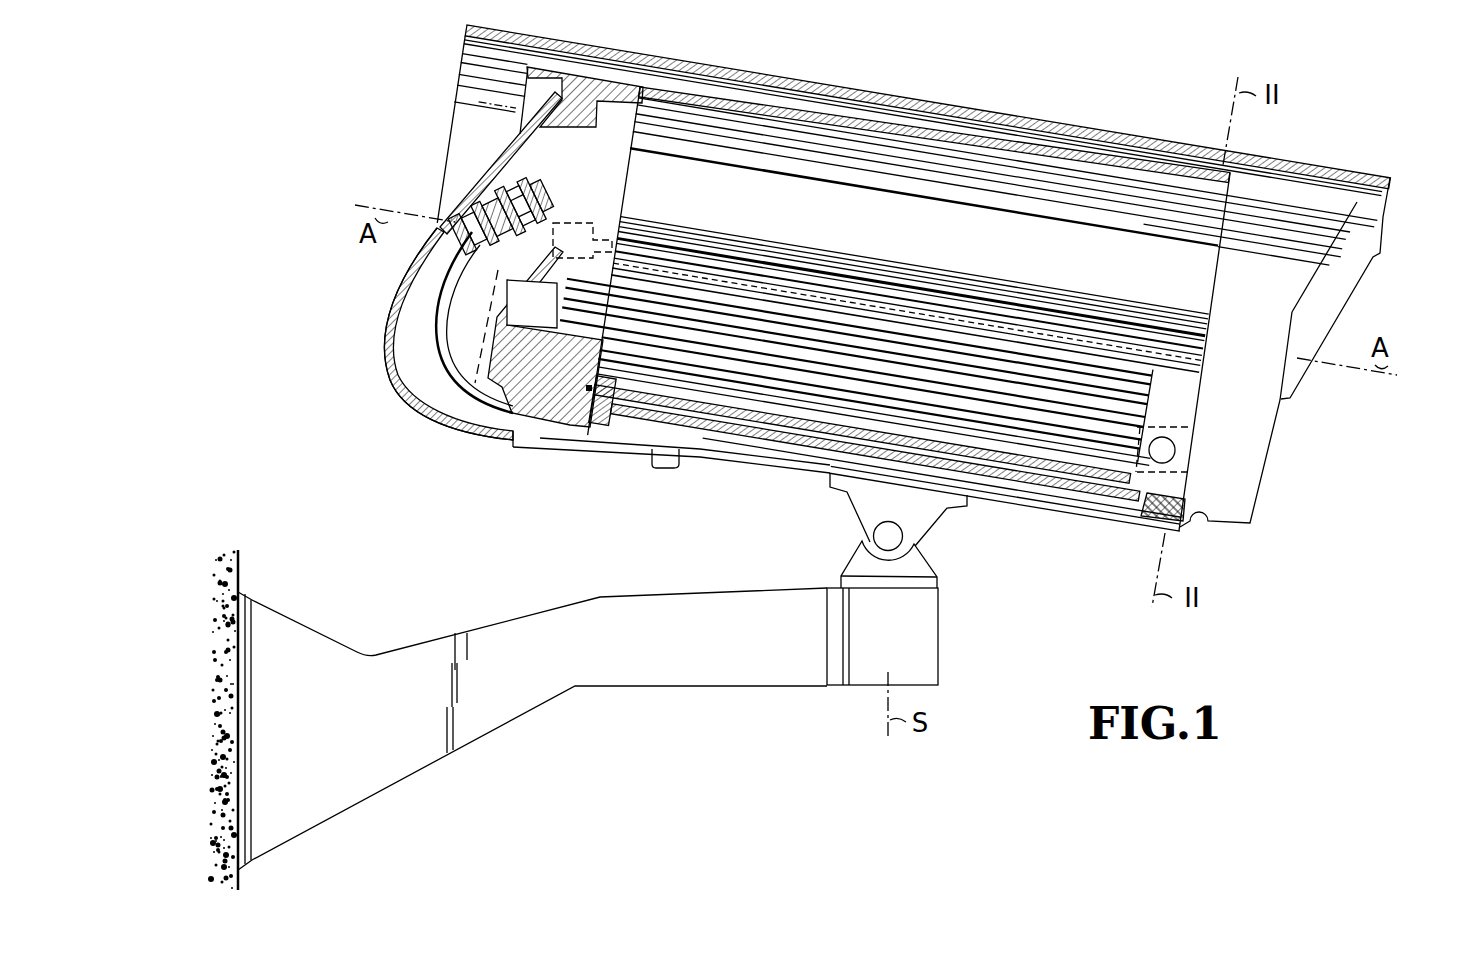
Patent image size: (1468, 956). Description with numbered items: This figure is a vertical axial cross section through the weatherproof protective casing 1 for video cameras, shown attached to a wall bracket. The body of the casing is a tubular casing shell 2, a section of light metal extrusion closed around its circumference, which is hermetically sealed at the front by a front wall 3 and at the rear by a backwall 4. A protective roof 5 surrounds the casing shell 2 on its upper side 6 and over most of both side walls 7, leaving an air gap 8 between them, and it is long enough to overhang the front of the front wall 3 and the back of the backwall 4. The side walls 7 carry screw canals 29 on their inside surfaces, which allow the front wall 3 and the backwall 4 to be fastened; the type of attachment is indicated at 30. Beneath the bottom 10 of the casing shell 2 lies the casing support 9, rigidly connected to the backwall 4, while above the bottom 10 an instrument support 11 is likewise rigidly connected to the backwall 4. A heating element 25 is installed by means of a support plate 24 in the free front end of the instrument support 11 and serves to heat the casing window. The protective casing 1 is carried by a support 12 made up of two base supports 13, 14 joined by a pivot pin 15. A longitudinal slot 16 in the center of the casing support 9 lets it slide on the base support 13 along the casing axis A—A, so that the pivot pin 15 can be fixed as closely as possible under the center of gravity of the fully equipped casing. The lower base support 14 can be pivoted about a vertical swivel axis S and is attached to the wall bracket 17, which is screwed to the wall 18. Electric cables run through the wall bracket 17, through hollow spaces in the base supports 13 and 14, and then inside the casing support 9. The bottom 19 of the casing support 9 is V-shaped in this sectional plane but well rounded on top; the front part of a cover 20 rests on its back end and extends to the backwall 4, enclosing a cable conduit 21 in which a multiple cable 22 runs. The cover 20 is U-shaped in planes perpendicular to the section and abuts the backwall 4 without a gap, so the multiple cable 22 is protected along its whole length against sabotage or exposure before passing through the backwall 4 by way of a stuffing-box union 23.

The protective casing 1 is at (972, 77).
The casing shell 2 is at (1108, 155).
The front wall 3 is at (1245, 476).
The backwall 4 is at (506, 149).
The protective roof 5 is at (828, 82).
The upper side 6 is at (1036, 160).
The side walls 7 is at (878, 206).
The air gap 8 is at (757, 86).
The casing support 9 is at (1092, 512).
The bottom 10 is at (758, 460).
The instrument support 11 is at (1105, 407).
The support 12 is at (940, 539).
The base support 13 is at (863, 508).
The lower base support 14 is at (857, 560).
The pivot pin 15 is at (893, 532).
The longitudinal slot 16 is at (712, 458).
The wall bracket 17 is at (505, 718).
The wall 18 is at (239, 566).
The bottom of the casing support 19 is at (653, 452).
The cover 20 is at (402, 398).
The cable conduit 21 is at (397, 321).
The multiple cable 22 is at (437, 345).
The stuffing-box union 23 is at (453, 210).
The support plate 24 is at (1123, 470).
The heating element 25 is at (1168, 449).
The screw canals 29 is at (1153, 323).
The attachment 30 is at (604, 220).